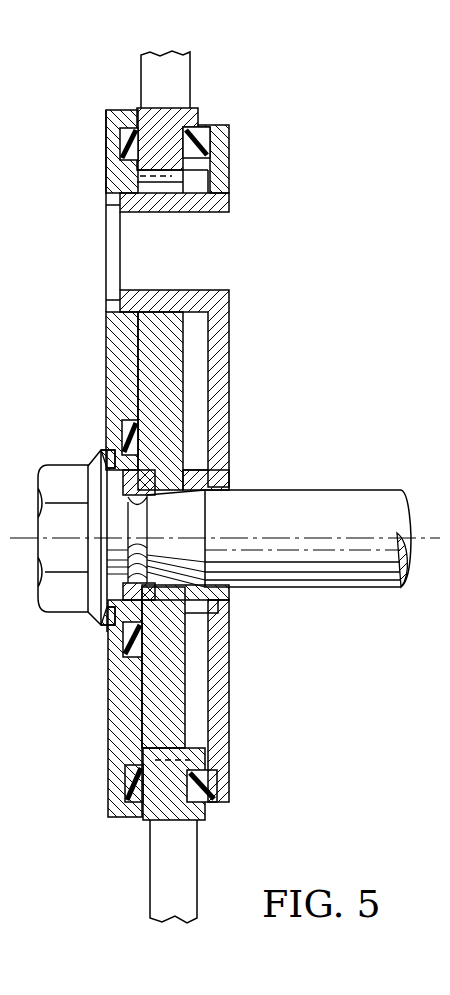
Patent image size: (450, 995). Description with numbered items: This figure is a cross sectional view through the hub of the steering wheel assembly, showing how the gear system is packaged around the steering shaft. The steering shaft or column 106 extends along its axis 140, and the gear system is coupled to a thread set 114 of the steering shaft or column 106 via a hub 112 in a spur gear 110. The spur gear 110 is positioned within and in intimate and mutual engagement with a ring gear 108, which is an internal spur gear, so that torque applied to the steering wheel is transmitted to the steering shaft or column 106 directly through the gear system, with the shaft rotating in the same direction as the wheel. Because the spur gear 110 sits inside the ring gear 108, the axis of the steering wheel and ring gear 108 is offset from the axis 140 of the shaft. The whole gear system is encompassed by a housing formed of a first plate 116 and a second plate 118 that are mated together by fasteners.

The ring gear 108 is at (172, 177).
The second plate 118 is at (229, 202).
The first plate 116 is at (107, 370).
The spur gear 110 is at (255, 530).
The hub 112 is at (187, 437).
The steering shaft or column 106 is at (284, 559).
The thread set 114 is at (273, 588).
The axis 140 is at (317, 537).